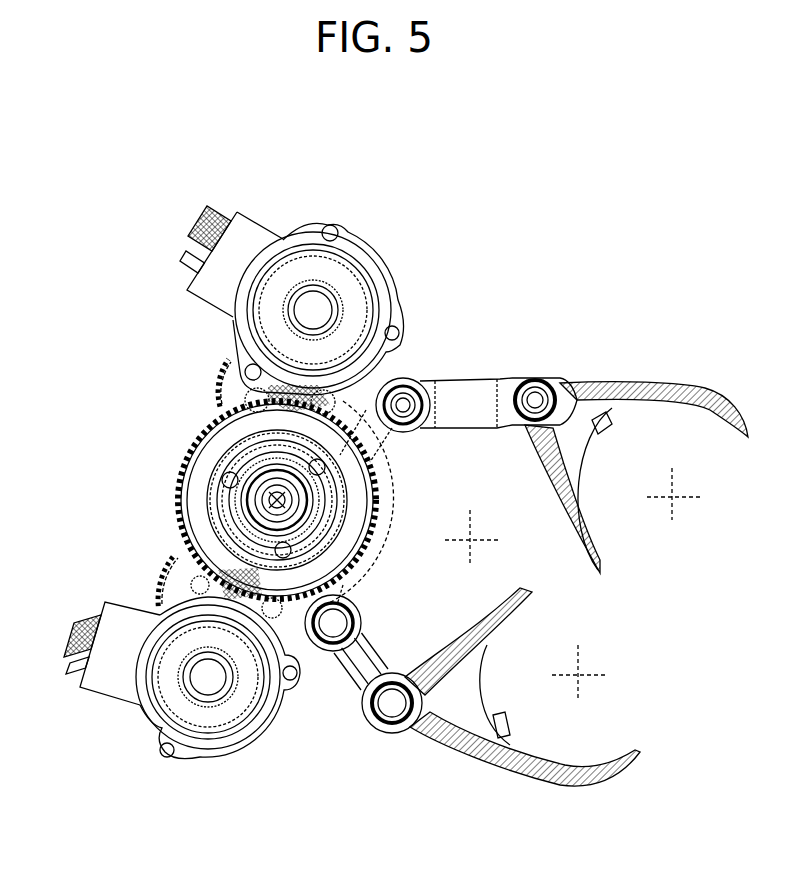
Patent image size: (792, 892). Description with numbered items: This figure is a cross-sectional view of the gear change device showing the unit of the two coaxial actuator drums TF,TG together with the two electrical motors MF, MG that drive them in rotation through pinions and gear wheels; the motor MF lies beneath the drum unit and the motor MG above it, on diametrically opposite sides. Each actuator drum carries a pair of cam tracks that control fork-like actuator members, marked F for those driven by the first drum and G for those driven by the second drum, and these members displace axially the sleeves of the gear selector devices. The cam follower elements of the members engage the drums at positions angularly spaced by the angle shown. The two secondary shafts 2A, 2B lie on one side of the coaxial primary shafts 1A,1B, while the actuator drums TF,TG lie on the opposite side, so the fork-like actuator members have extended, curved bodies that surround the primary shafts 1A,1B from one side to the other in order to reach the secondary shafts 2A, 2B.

The electrical motor MG is at (393, 287).
The electrical motor MF is at (121, 706).
The actuator drums TF,TG is at (192, 437).
The first and second primary shafts 1A,1B is at (470, 542).
The first secondary shaft 2A is at (673, 495).
The second secondary shaft 2B is at (580, 673).